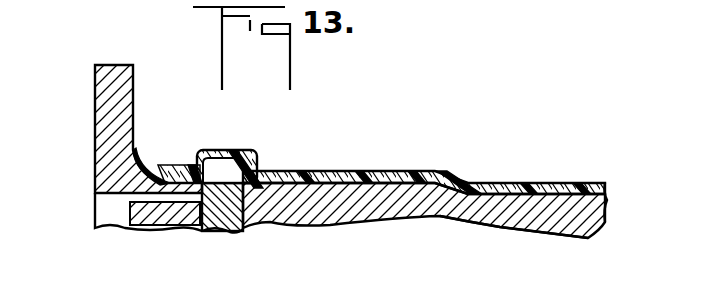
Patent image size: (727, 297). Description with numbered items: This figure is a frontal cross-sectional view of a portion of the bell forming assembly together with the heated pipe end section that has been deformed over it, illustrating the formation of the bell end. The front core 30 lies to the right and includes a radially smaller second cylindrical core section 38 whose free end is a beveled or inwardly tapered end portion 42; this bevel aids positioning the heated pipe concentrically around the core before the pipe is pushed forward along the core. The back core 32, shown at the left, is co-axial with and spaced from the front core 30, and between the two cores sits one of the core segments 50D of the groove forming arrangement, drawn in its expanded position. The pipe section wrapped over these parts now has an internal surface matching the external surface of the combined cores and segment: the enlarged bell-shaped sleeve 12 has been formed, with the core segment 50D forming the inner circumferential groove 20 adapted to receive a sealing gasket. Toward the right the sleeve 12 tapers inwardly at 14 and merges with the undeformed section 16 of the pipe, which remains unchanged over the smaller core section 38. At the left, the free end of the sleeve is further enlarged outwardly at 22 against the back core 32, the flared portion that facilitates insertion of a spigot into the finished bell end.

The back core 32 is at (107, 163).
The outwardly tapering end 22 is at (160, 166).
The inner circumferential groove 20 is at (226, 170).
The enlarged bell-shaped sleeve 12 is at (320, 178).
The inward taper 14 is at (447, 180).
The undeformed section of the pipe 16 is at (563, 183).
The beveled end portion 42 is at (600, 212).
The second cylindrical core section 38 is at (508, 218).
The front core 30 is at (370, 207).
The core segment 50D is at (226, 222).